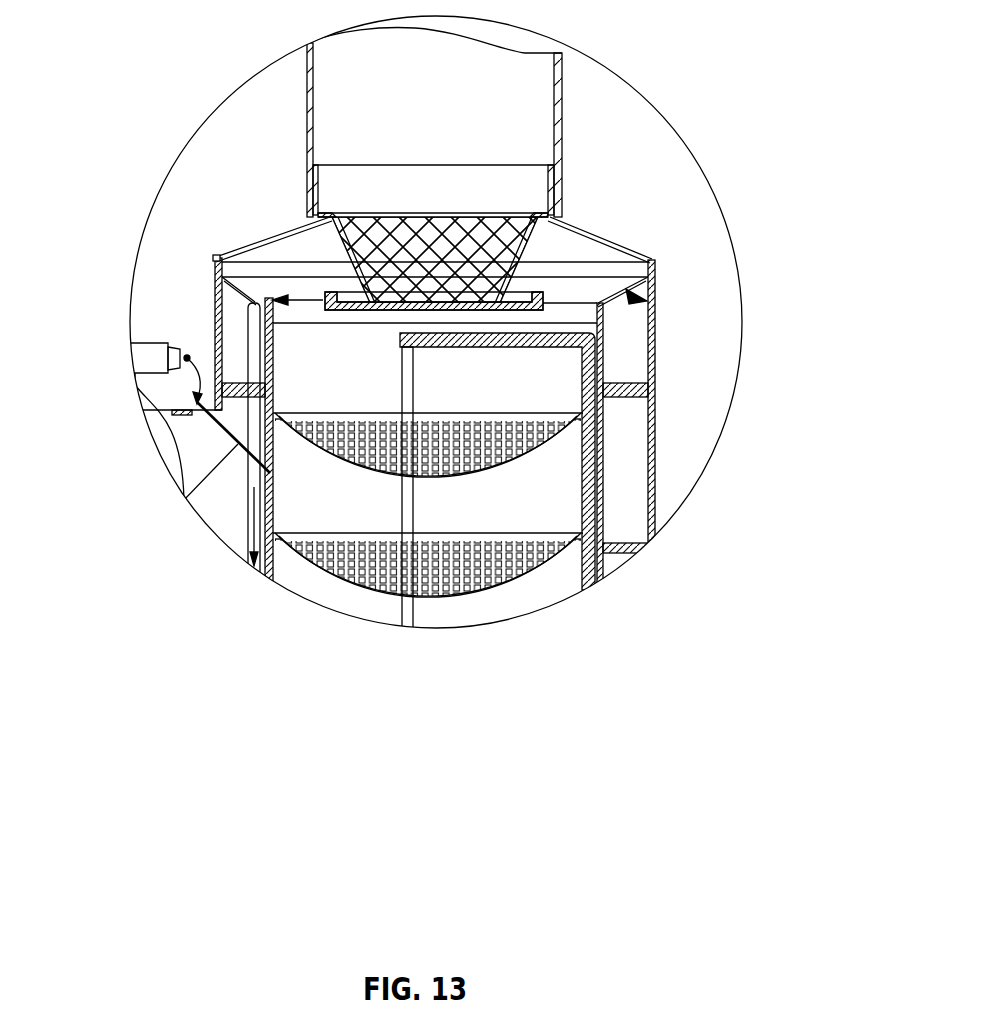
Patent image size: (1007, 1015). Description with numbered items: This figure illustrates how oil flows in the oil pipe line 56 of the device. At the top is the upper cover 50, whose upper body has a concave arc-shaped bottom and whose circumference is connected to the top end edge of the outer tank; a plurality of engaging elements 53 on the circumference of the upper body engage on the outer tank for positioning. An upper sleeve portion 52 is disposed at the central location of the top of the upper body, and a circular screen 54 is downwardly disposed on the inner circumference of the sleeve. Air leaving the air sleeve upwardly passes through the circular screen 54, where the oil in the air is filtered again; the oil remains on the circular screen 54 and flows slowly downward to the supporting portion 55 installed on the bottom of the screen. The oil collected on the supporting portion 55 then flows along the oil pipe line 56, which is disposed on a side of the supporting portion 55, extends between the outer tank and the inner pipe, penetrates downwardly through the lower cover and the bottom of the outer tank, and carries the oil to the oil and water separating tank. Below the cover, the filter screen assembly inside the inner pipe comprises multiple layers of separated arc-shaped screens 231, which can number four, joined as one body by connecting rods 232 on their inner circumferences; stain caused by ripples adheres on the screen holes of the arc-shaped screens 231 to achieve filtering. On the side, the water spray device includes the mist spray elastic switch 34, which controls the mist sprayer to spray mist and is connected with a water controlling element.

The mist spray elastic switch 34 is at (170, 343).
The upper cover 50 is at (612, 231).
The upper sleeve portion 52 is at (560, 182).
The engaging elements 53 is at (217, 258).
The circular screen 54 is at (347, 300).
The supporting portion 55 is at (333, 230).
The oil pipe line 56 is at (250, 527).
The arc-shaped screens 231 is at (540, 443).
The connecting rods 232 is at (597, 517).